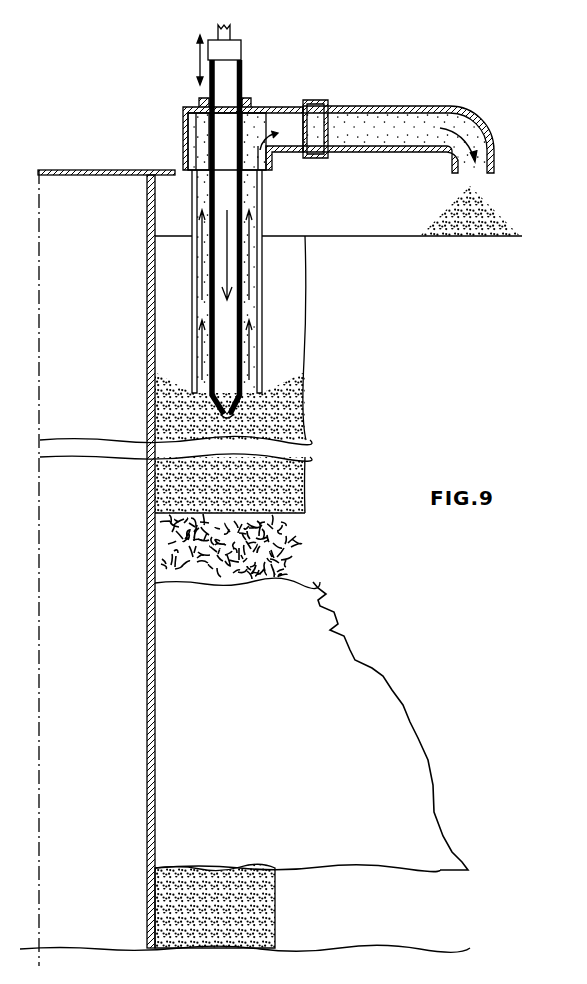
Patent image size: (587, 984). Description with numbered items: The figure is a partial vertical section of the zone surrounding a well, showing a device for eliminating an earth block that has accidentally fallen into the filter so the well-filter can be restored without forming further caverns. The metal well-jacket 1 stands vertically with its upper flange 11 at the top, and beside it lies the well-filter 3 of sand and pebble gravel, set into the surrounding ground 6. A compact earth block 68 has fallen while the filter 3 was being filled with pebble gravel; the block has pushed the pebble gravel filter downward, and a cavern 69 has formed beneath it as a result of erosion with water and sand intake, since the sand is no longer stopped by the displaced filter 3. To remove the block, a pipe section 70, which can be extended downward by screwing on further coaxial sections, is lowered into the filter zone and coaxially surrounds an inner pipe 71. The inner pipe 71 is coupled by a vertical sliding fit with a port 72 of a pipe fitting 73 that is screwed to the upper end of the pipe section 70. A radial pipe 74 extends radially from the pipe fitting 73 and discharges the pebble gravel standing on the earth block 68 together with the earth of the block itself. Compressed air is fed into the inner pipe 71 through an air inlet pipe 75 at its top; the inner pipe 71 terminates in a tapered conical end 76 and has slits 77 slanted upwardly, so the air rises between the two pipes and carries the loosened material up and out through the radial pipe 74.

The metal well-jacket 1 is at (147, 648).
The well-filter 3 is at (283, 420).
The ground 6 is at (478, 296).
The upper flange 11 is at (172, 176).
The compact earth block 68 is at (300, 555).
The cavern 69 is at (380, 722).
The pipe section 70 is at (262, 278).
The pipe 71 is at (258, 180).
The port 72 is at (200, 100).
The pipe fitting 73 is at (183, 140).
The radial pipe 74 is at (395, 106).
The air inlet pipe 75 is at (232, 35).
The tapered conical end 76 is at (228, 400).
The slits 77 is at (242, 305).